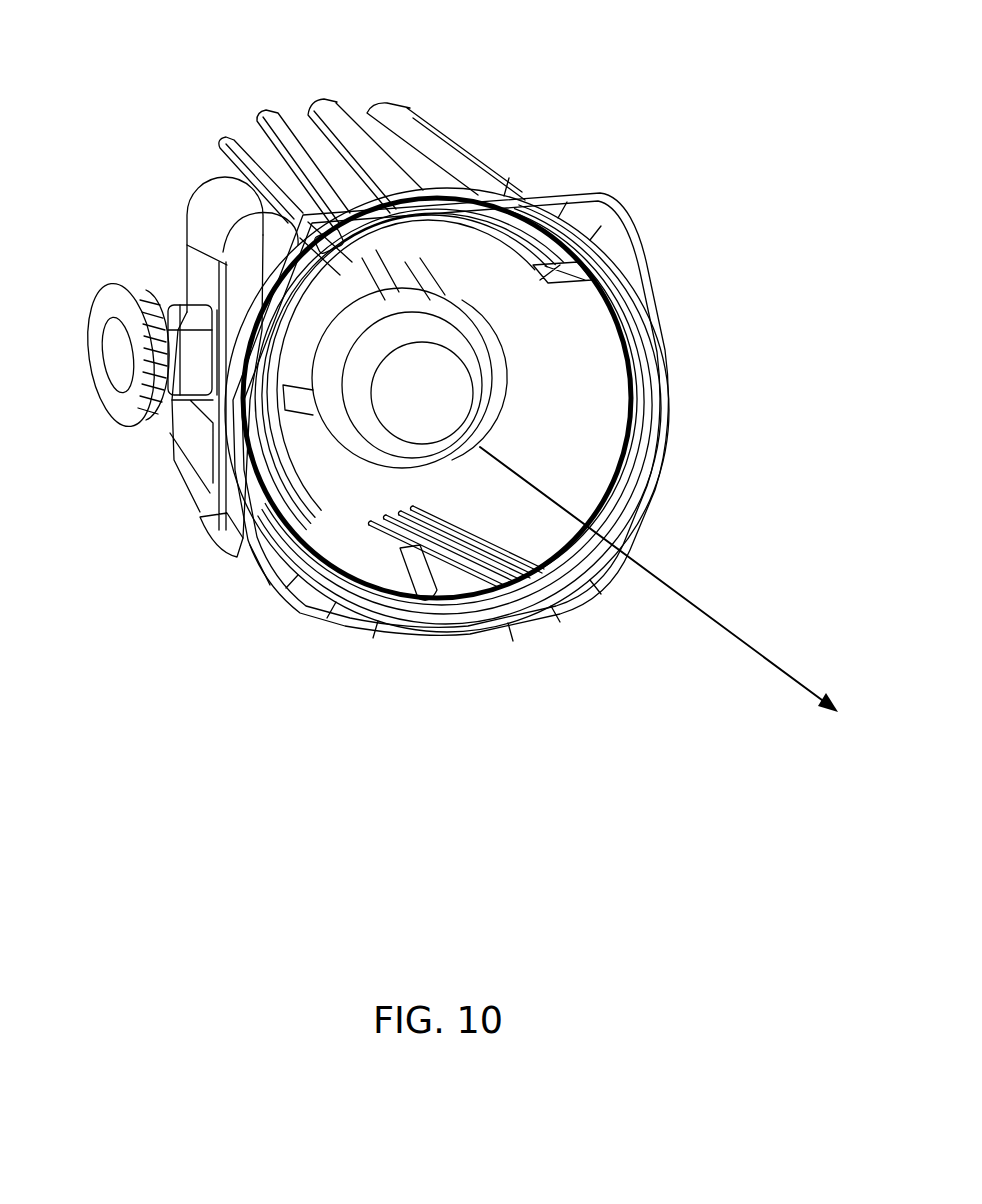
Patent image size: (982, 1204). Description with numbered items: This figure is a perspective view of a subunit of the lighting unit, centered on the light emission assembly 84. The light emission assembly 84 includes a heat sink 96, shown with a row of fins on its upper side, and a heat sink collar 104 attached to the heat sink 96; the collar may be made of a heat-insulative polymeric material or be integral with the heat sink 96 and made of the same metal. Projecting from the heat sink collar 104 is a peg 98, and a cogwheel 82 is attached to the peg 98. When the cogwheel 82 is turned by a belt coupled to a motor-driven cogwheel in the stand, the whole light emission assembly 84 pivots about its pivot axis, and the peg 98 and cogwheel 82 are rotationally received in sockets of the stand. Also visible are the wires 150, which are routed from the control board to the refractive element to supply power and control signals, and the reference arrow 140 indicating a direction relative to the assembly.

The cogwheel 82 is at (116, 420).
The light emission assembly 84 is at (487, 110).
The heat sink 96 is at (413, 128).
The peg 98 is at (178, 312).
The heat sink collar 104 is at (204, 204).
The optical axis 140 is at (685, 597).
The wires 150 is at (450, 586).